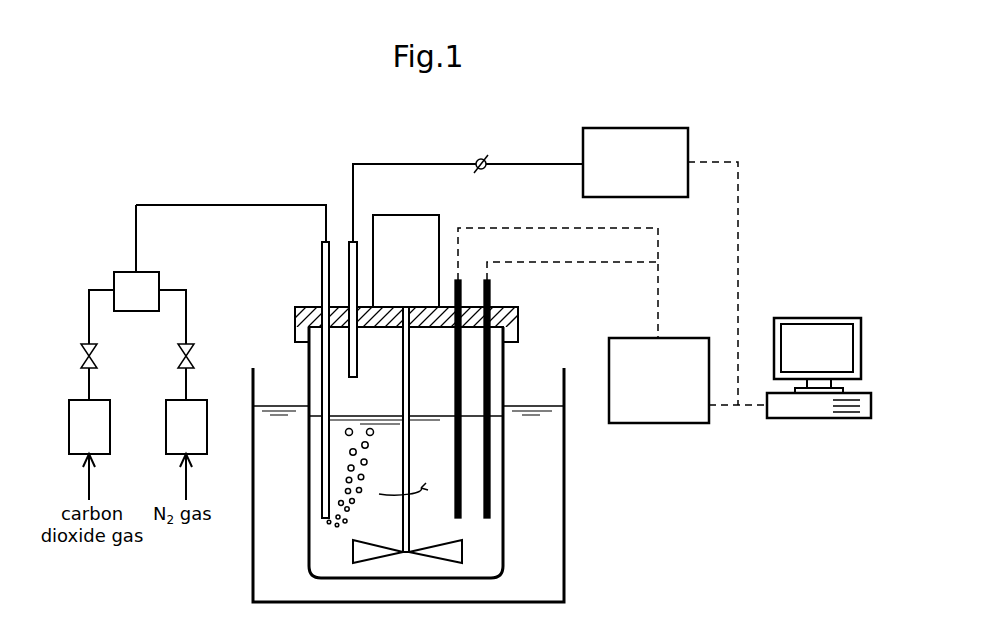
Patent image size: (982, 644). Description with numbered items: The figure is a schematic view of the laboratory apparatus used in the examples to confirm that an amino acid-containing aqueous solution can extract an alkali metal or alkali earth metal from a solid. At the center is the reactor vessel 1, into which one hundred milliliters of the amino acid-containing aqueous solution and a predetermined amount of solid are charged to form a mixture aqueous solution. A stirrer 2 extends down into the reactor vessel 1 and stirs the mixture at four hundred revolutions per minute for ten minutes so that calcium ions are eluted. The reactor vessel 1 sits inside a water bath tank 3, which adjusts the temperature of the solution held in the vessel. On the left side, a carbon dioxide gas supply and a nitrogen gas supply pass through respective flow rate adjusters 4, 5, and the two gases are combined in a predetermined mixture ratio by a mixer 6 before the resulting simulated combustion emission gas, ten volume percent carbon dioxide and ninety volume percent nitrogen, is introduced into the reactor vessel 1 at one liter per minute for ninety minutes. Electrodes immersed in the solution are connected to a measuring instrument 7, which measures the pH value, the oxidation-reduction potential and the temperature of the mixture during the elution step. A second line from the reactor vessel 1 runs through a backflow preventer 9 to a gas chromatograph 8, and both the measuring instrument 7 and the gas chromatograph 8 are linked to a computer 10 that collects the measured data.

The reactor vessel 1 is at (309, 370).
The stirrer 2 is at (425, 215).
The water bath tank 3 is at (565, 541).
The flow rate adjuster 4 is at (69, 440).
The flow rate adjuster 5 is at (166, 432).
The mixer 6 is at (127, 272).
The measuring instrument 7 is at (659, 423).
The gas chromatograph 8 is at (672, 128).
The backflow preventer 9 is at (478, 160).
The computer 10 is at (826, 318).